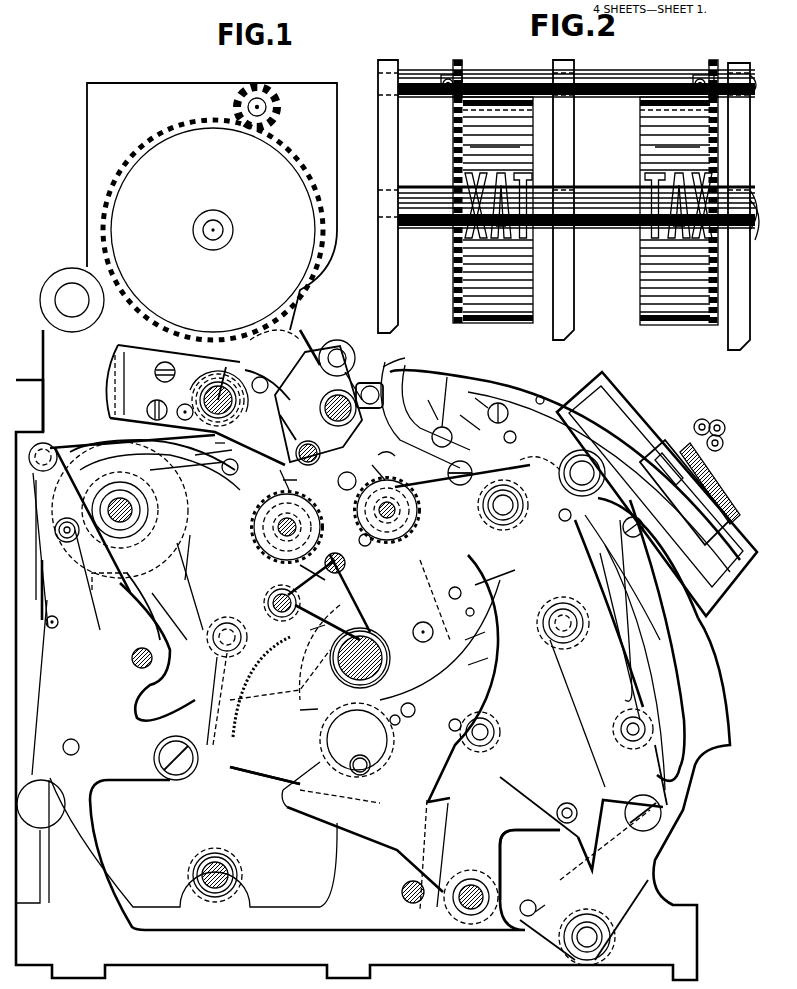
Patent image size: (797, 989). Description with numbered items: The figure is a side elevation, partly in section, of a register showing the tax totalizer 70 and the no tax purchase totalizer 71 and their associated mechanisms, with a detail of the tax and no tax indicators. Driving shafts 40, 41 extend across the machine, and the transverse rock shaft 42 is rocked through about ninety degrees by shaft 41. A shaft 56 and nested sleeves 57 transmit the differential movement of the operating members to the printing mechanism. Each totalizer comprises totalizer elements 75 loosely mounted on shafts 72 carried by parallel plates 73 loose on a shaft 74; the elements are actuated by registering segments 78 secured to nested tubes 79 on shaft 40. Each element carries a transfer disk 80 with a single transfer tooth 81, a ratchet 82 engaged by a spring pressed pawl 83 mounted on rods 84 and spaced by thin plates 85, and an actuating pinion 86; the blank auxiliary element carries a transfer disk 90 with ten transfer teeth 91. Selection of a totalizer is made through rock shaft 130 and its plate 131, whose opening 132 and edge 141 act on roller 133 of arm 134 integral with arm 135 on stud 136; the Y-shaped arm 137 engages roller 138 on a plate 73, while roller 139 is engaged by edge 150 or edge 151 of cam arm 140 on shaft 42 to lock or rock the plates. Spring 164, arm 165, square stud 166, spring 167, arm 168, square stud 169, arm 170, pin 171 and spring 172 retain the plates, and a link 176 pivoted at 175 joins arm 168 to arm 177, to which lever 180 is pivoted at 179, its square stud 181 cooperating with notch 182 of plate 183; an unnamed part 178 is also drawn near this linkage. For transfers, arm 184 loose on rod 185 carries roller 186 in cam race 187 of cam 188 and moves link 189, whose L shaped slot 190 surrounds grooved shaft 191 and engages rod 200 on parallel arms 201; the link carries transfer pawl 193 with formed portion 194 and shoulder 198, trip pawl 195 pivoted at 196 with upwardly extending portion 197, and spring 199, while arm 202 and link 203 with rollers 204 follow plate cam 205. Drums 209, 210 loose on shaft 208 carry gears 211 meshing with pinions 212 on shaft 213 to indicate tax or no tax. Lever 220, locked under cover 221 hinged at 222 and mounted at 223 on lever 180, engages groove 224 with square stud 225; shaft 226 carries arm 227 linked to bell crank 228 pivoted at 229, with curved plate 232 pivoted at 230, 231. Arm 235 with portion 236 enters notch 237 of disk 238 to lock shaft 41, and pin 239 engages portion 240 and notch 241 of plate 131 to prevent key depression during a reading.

In FIG. 1, the shaft 40 is at (254, 371).
In FIG. 1, the driving shaft 41 is at (133, 510).
In FIG. 1, the rock shaft 42 is at (332, 738).
In FIG. 1, the shaft 56 is at (228, 868).
In FIG. 1, the nested sleeves 57 is at (237, 875).
In FIG. 1, the tax totalizer 70 is at (272, 527).
In FIG. 1, the no tax purchase totalizer 71 is at (374, 465).
In FIG. 1, the shafts 72 is at (358, 517).
In FIG. 1, the parallel plates 73 is at (480, 688).
In FIG. 1, the shaft 74 is at (390, 665).
In FIG. 1, the totalizer elements 75 is at (291, 525).
In FIG. 1, the registering segments 78 is at (276, 341).
In FIG. 1, the nested tubes 79 is at (212, 388).
In FIG. 1, the transfer disk 80 is at (400, 525).
In FIG. 1, the transfer tooth 81 is at (388, 446).
In FIG. 1, the ratchet 82 is at (278, 510).
In FIG. 1, the spring pressed pawl 83 is at (370, 544).
In FIG. 1, the rods 84 is at (275, 606).
In FIG. 1, the thin plates 85 is at (365, 592).
In FIG. 1, the actuating pinion 86 is at (355, 508).
In FIG. 1, the transfer disk 90 is at (262, 540).
In FIG. 1, the transfer teeth 91 is at (276, 522).
In FIG. 1, the rock shaft 130 is at (600, 937).
In FIG. 1, the plate 131 is at (628, 908).
In FIG. 1, the opening 132 is at (575, 842).
In FIG. 1, the roller 133 is at (560, 813).
In FIG. 1, the arm 134 is at (539, 805).
In FIG. 1, the arm 135 is at (510, 857).
In FIG. 1, the stud 136 is at (478, 886).
In FIG. 1, the Y-shaped arm 137 is at (373, 838).
In FIG. 1, the roller 138 is at (350, 763).
In FIG. 1, the roller 139 is at (490, 722).
In FIG. 1, the cam arm 140 is at (294, 708).
In FIG. 1, the edge 141 is at (615, 845).
In FIG. 1, the edge 150 is at (492, 658).
In FIG. 1, the edge 151 is at (491, 635).
In FIG. 1, the spring 164 is at (280, 675).
In FIG. 1, the arm 165 is at (478, 612).
In FIG. 1, the square stud 166 is at (490, 576).
In FIG. 1, the spring 167 is at (438, 600).
In FIG. 1, the arm 168 is at (330, 645).
In FIG. 1, the square stud 169 is at (440, 600).
In FIG. 1, the arm 170 is at (418, 707).
In FIG. 1, the pin 171 is at (400, 720).
In FIG. 1, the spring 172 is at (267, 687).
In FIG. 1, the pivot 175 is at (285, 581).
In FIG. 1, the link 176 is at (425, 415).
In FIG. 1, the arm 177 is at (567, 475).
In FIG. 1, the lever 178 is at (405, 745).
In FIG. 1, the pivot 179 is at (431, 401).
In FIG. 1, the lever 180 is at (466, 414).
In FIG. 1, the square stud 181 is at (505, 405).
In FIG. 1, the notch 182 is at (512, 430).
In FIG. 1, the plate 183 is at (474, 394).
In FIG. 1, the arm 184 is at (62, 625).
In FIG. 1, the rod 185 is at (130, 652).
In FIG. 1, the anti-friction roller 186 is at (75, 540).
In FIG. 1, the cam race 187 is at (170, 509).
In FIG. 1, the cam 188 is at (80, 440).
In FIG. 1, the link 189 is at (165, 455).
In FIG. 1, the L shaped slot 190 is at (329, 405).
In FIG. 1, the grooved shaft 191 is at (363, 376).
In FIG. 1, the transfer pawl 193 is at (322, 435).
In FIG. 1, the formed portion 194 is at (298, 481).
In FIG. 1, the trip pawl 195 is at (222, 476).
In FIG. 1, the pivot 196 is at (187, 474).
In FIG. 1, the upwardly extending portion 197 is at (199, 460).
In FIG. 1, the shoulder 198 is at (203, 444).
In FIG. 1, the spring 199 is at (273, 415).
In FIG. 1, the rod 200 is at (415, 378).
In FIG. 1, the parallel arms 201 is at (406, 354).
In FIG. 1, the upwardly extending arm 202 is at (372, 383).
In FIG. 1, the link 203 is at (327, 352).
In FIG. 1, the rollers 204 is at (170, 393).
In FIG. 1, the plate cam 205 is at (212, 358).
In FIG. 1, the shaft 208 is at (232, 223).
In FIG. 2, the shaft 208 is at (743, 224).
In FIG. 2, the drum 209 is at (527, 153).
In FIG. 2, the drum 210 is at (640, 118).
In FIG. 1, the gears 211 is at (300, 152).
In FIG. 2, the gears 211 is at (455, 140).
In FIG. 1, the pinions 212 is at (246, 98).
In FIG. 2, the pinions 212 is at (460, 66).
In FIG. 1, the shaft 213 is at (268, 107).
In FIG. 2, the shaft 213 is at (605, 78).
In FIG. 1, the lever 220 is at (710, 484).
In FIG. 1, the cover 221 is at (650, 412).
In FIG. 1, the hinge point 222 is at (545, 396).
In FIG. 1, the pivot 223 is at (596, 484).
In FIG. 1, the groove 224 is at (537, 466).
In FIG. 1, the square stud 225 is at (570, 521).
In FIG. 1, the short horizontal shaft 226 is at (445, 473).
In FIG. 1, the arm 227 is at (548, 570).
In FIG. 1, the bell crank 228 is at (598, 757).
In FIG. 1, the pivot 229 is at (638, 775).
In FIG. 1, the pivot 230 is at (503, 518).
In FIG. 1, the pivot 231 is at (640, 720).
In FIG. 1, the curved plate 232 is at (662, 634).
In FIG. 1, the arm 235 is at (168, 610).
In FIG. 1, the upwardly extending portion 236 is at (175, 598).
In FIG. 1, the notch 237 is at (148, 585).
In FIG. 1, the disk 238 is at (200, 545).
In FIG. 1, the pin 239 is at (533, 900).
In FIG. 1, the portion 240 is at (527, 925).
In FIG. 1, the notch 241 is at (558, 927).